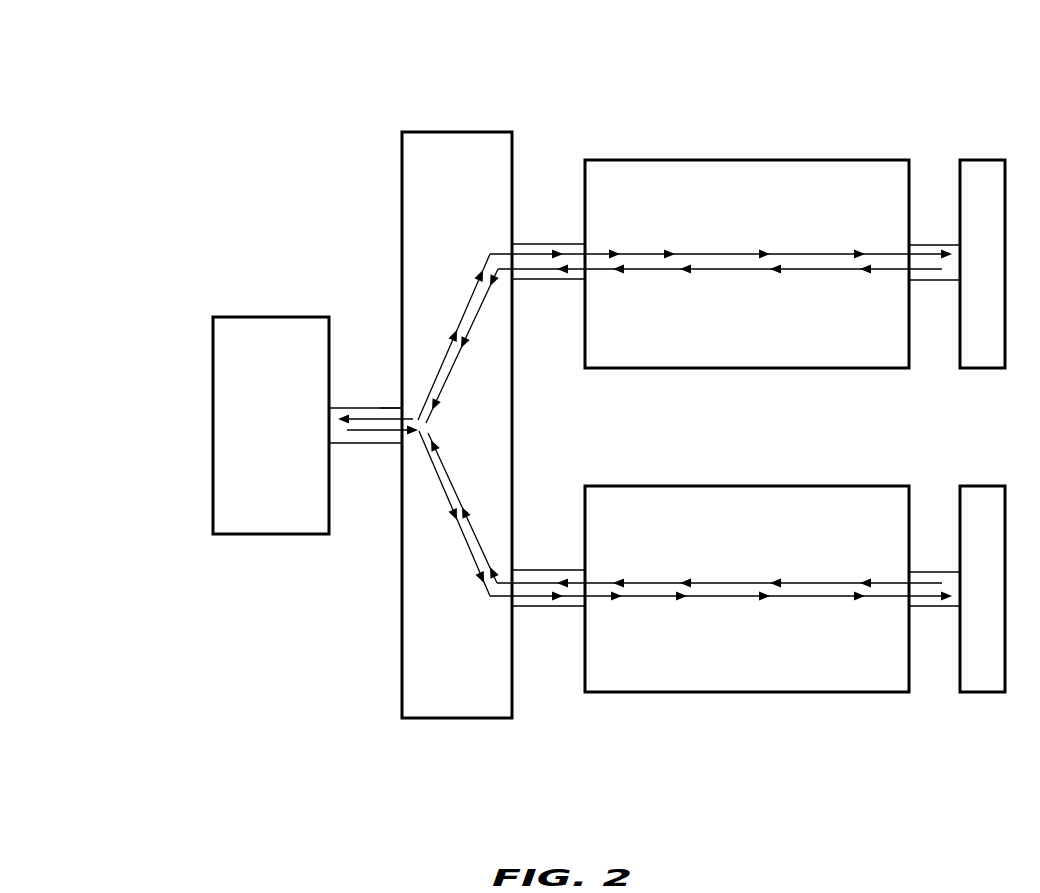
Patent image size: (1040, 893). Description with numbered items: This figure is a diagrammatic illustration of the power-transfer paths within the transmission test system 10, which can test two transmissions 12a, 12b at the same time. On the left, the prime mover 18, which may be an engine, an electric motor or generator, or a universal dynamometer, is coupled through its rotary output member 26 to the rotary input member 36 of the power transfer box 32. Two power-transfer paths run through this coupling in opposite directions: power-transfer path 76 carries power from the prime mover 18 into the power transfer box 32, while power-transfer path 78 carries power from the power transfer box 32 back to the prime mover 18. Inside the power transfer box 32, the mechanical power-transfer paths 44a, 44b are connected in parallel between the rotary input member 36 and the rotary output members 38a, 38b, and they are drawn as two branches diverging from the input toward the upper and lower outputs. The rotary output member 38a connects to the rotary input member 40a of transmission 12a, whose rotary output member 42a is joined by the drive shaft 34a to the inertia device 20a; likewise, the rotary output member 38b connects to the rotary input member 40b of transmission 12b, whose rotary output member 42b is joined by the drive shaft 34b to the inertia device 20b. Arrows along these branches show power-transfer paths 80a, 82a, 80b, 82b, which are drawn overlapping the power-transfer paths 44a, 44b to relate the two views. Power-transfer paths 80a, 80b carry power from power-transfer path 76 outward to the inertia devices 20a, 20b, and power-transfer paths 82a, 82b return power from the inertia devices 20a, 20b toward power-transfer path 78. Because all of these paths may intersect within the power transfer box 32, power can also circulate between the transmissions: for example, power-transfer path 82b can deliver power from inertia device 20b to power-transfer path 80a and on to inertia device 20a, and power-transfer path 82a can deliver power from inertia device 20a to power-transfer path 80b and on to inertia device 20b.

The transmission test system 10 is at (145, 66).
The prime mover 18 is at (280, 534).
The power transfer box 32 is at (473, 718).
The transmission 12a is at (690, 160).
The transmission 12b is at (692, 692).
The inertia device 20a is at (995, 160).
The inertia device 20b is at (995, 692).
The rotary output member 26 is at (340, 443).
The rotary input member 36 is at (395, 408).
The power-transfer path 78 is at (345, 419).
The power-transfer path 76 is at (373, 431).
The rotary output member 38a is at (530, 244).
The rotary input member 40a is at (570, 279).
The rotary output member 38b is at (537, 606).
The rotary input member 40b is at (572, 606).
The rotary output member 42a is at (918, 245).
The drive shaft 34a is at (948, 245).
The rotary output member 42b is at (918, 606).
The drive shaft 34b is at (948, 606).
The power-transfer path 80a is at (655, 254).
The power-transfer path 82a is at (660, 269).
The power-transfer path 80b is at (655, 596).
The power-transfer path 82b is at (660, 583).
The mechanical power-transfer path 44a is at (470, 300).
The mechanical power-transfer path 44b is at (457, 520).